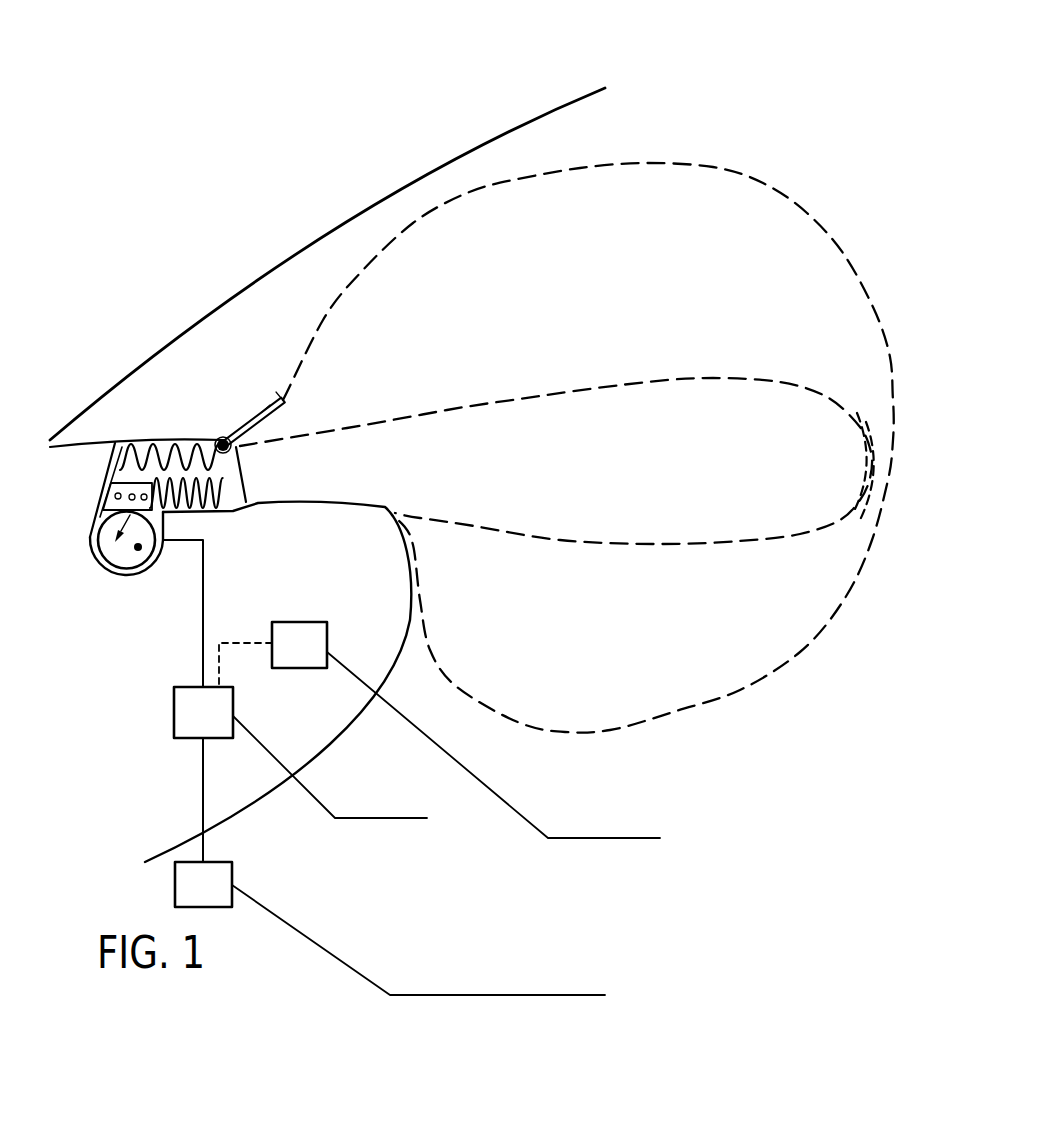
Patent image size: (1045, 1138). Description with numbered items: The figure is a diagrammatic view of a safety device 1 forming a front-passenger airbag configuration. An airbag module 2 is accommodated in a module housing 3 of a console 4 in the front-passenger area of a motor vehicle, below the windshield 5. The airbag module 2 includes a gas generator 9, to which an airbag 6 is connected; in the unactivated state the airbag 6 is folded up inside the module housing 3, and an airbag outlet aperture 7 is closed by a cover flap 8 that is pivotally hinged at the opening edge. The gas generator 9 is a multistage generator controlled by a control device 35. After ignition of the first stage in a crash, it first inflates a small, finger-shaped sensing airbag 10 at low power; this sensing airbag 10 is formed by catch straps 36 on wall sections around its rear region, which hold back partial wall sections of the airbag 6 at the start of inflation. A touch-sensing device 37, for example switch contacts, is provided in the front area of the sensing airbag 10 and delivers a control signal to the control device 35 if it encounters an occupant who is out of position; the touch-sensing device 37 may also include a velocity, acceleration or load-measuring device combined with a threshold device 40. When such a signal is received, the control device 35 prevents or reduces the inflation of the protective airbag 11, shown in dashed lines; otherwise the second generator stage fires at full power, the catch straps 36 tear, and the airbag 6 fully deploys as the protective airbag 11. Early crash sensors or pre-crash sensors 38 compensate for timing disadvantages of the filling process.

The safety device 1 is at (757, 125).
The airbag module 2 is at (105, 560).
The module housing 3 is at (129, 580).
The console 4 is at (296, 730).
The windshield 5 is at (262, 275).
The airbag 6 is at (125, 447).
The airbag outlet aperture 7 is at (227, 452).
The cover flap 8 is at (250, 410).
The gas generator 9 is at (140, 550).
The sensing airbag 10 is at (714, 479).
The protective airbag 11 is at (581, 292).
The control device 35 is at (189, 727).
The catch straps 36 is at (172, 447).
The touch-sensing device 37 is at (868, 497).
The early crash sensors and/or pre-crash sensors 38 is at (189, 898).
The threshold device 40 is at (285, 660).